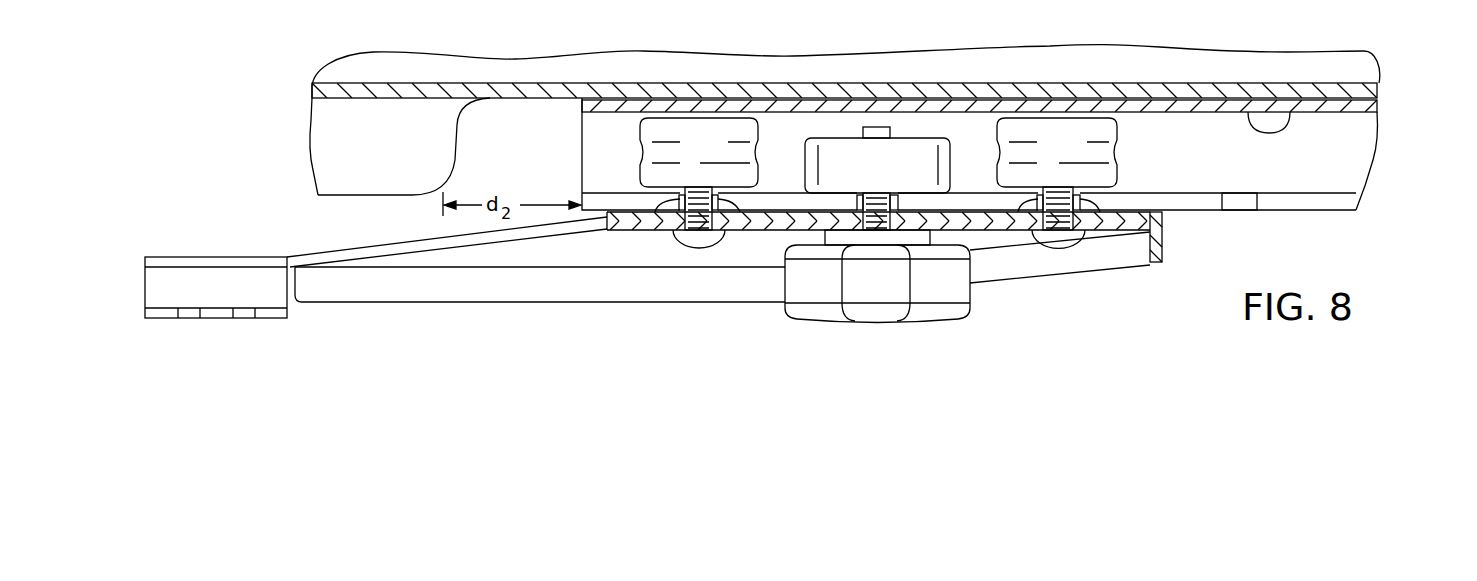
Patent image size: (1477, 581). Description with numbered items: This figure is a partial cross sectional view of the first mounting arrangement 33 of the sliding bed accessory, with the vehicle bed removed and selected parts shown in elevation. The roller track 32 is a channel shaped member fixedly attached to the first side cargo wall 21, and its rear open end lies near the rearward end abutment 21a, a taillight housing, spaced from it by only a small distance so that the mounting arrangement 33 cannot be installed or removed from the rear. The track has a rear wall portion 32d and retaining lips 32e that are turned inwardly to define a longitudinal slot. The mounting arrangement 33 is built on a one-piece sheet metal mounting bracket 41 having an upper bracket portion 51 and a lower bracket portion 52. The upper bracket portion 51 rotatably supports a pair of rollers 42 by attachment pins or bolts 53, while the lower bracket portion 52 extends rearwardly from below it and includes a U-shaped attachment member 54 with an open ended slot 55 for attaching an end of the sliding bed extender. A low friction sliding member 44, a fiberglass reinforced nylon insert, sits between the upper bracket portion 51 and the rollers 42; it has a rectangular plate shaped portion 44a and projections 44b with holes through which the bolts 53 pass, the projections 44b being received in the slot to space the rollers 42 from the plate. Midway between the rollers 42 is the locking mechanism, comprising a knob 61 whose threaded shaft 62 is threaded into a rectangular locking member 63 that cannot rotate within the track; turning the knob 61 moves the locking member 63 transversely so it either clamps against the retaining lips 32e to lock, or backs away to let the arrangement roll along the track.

The first side cargo wall 21 is at (1382, 93).
The rearward end abutment 21a is at (462, 146).
The roller track 32 is at (1392, 132).
The rear wall portion 32d is at (1250, 112).
The retaining lips 32e is at (1305, 200).
The first mounting arrangement 33 is at (982, 345).
The mounting bracket 41 is at (546, 311).
The rollers 42 is at (638, 128).
The sliding member 44 is at (1138, 203).
The plate shaped portion 44a is at (1115, 217).
The projections 44b is at (1037, 204).
The upper bracket portion 51 is at (752, 233).
The lower bracket portion 52 is at (318, 258).
The attachment pins or bolts 53 is at (690, 240).
The U-shaped attachment member 54 is at (143, 282).
The open ended slot 55 is at (214, 328).
The knob 61 is at (866, 325).
The threaded shaft 62 is at (875, 127).
The locking member 63 is at (805, 170).